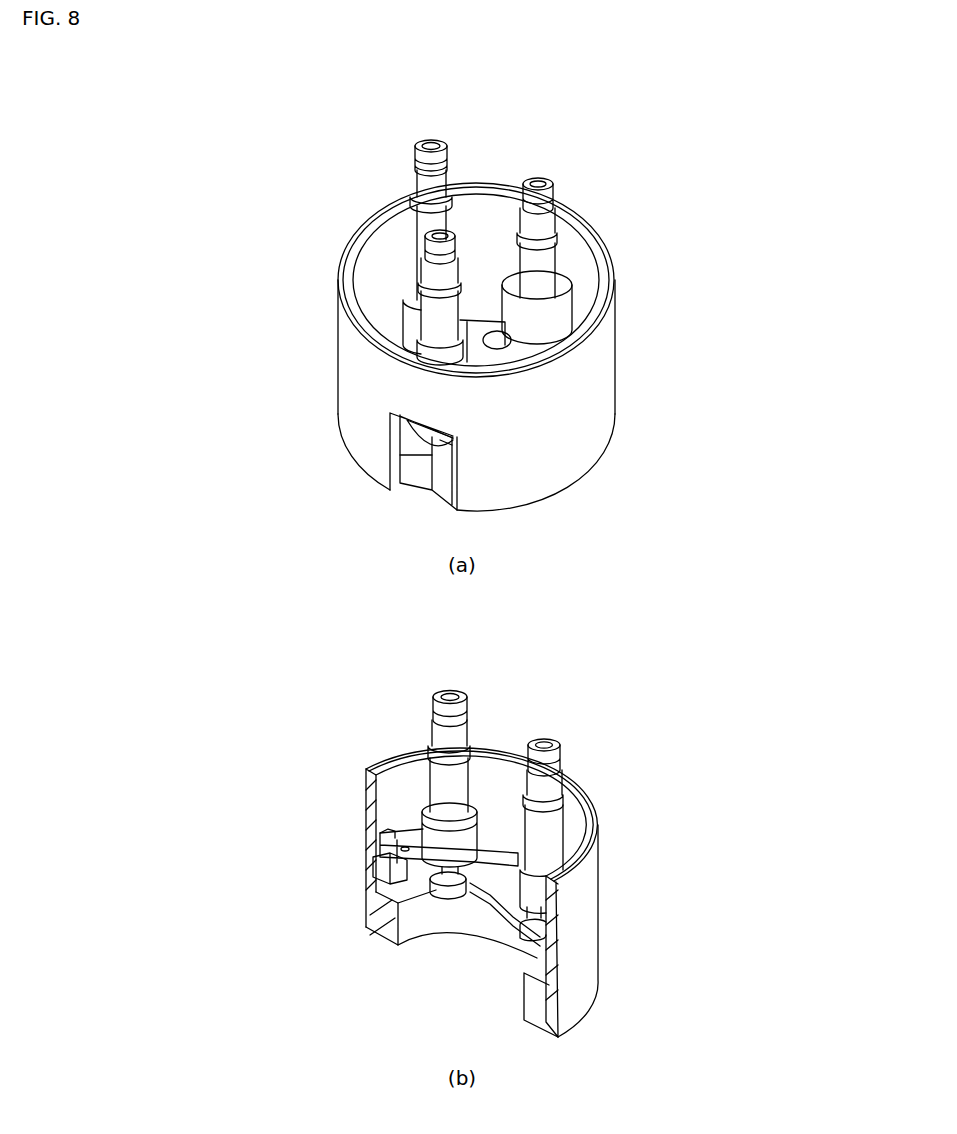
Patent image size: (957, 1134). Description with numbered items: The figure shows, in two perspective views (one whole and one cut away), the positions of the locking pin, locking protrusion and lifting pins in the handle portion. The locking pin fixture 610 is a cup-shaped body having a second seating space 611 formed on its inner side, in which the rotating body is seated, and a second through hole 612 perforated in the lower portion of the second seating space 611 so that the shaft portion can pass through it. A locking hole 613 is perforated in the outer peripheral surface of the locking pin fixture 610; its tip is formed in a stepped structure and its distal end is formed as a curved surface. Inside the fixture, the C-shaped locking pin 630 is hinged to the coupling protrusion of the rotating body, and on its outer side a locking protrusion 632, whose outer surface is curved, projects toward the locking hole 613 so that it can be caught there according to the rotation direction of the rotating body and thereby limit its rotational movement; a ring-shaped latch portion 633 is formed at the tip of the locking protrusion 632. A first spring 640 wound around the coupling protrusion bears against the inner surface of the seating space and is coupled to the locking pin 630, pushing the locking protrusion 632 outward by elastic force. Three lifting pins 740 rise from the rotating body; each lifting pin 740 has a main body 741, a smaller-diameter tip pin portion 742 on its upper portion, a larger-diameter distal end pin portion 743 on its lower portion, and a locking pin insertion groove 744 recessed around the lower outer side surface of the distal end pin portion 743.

The locking pin fixture 610 is at (503, 610).
The second seating space 611 is at (488, 226).
The second through hole 612 is at (429, 956).
The locking hole 613 is at (393, 725).
The locking pin 630 is at (498, 573).
The locking protrusion 632 is at (557, 407).
The latch portion 633 is at (491, 635).
The first spring 640 is at (315, 871).
The lifting pin 740 is at (490, 252).
The main body 741 is at (556, 766).
The tip pin portion 742 is at (550, 713).
The distal end pin portion 743 is at (558, 835).
The locking pin insertion groove 744 is at (352, 920).